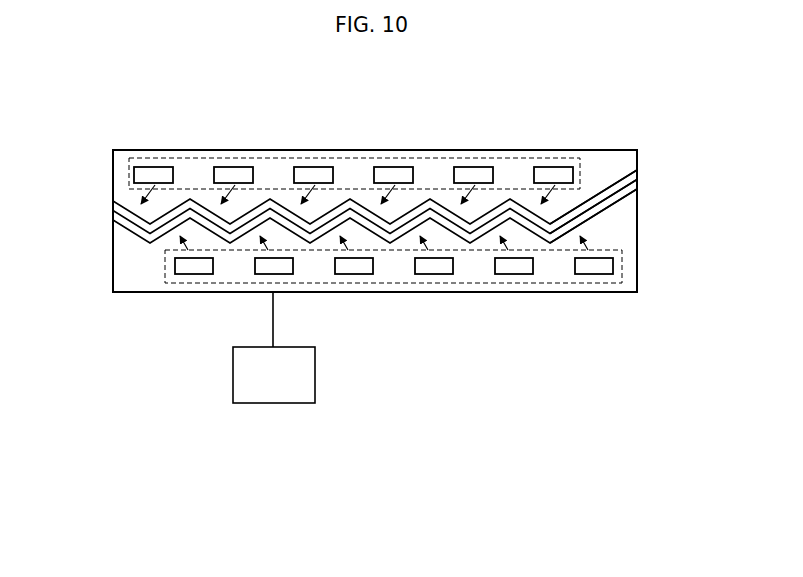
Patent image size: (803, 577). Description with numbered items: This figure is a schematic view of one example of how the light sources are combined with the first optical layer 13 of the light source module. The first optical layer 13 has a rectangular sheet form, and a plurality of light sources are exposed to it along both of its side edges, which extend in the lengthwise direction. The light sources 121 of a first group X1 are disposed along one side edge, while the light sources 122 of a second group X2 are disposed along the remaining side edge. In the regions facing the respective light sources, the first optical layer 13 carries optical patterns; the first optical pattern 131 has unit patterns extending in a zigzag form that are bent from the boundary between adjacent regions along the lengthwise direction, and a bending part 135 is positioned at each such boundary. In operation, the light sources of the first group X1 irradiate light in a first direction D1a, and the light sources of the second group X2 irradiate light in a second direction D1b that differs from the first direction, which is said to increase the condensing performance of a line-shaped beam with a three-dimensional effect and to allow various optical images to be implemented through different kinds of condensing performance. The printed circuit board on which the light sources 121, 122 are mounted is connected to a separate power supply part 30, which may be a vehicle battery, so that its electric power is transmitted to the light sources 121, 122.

The first optical layer 13 is at (598, 149).
The light sources 121 is at (236, 166).
The light sources 122 is at (432, 275).
The first optical pattern 131 is at (613, 206).
The bending part 135 is at (510, 198).
The power supply part 30 is at (316, 372).
The first group X1 is at (353, 158).
The second group X2 is at (555, 283).
The first direction D1a is at (129, 190).
The second direction D1b is at (170, 249).